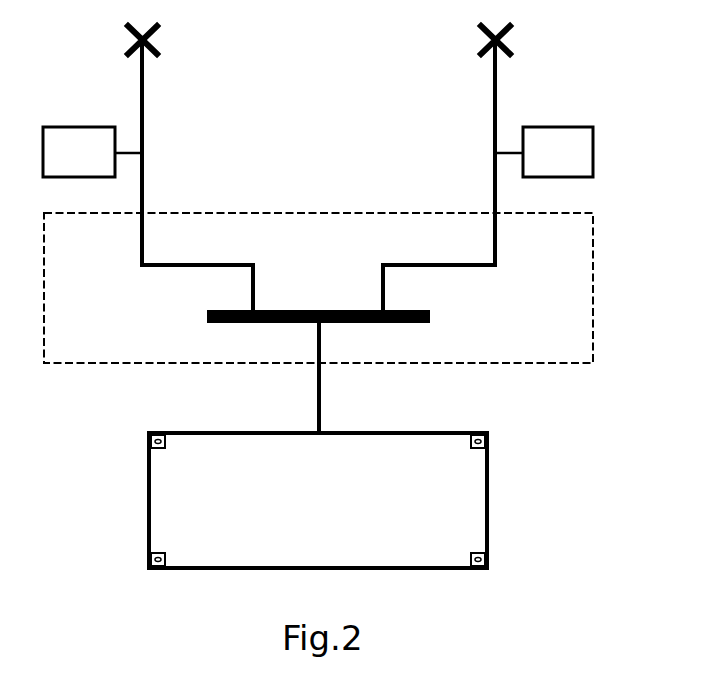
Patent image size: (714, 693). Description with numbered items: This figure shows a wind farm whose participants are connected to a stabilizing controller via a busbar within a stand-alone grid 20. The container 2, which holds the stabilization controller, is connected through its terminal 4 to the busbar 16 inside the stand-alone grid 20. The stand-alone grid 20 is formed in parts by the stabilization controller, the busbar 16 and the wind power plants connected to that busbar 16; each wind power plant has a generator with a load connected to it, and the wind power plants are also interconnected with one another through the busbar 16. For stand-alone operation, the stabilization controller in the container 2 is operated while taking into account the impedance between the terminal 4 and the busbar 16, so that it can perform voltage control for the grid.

The container 2 is at (489, 500).
The terminal 4 is at (319, 407).
The busbar 16 is at (432, 318).
The stand-alone grid 20 is at (593, 288).